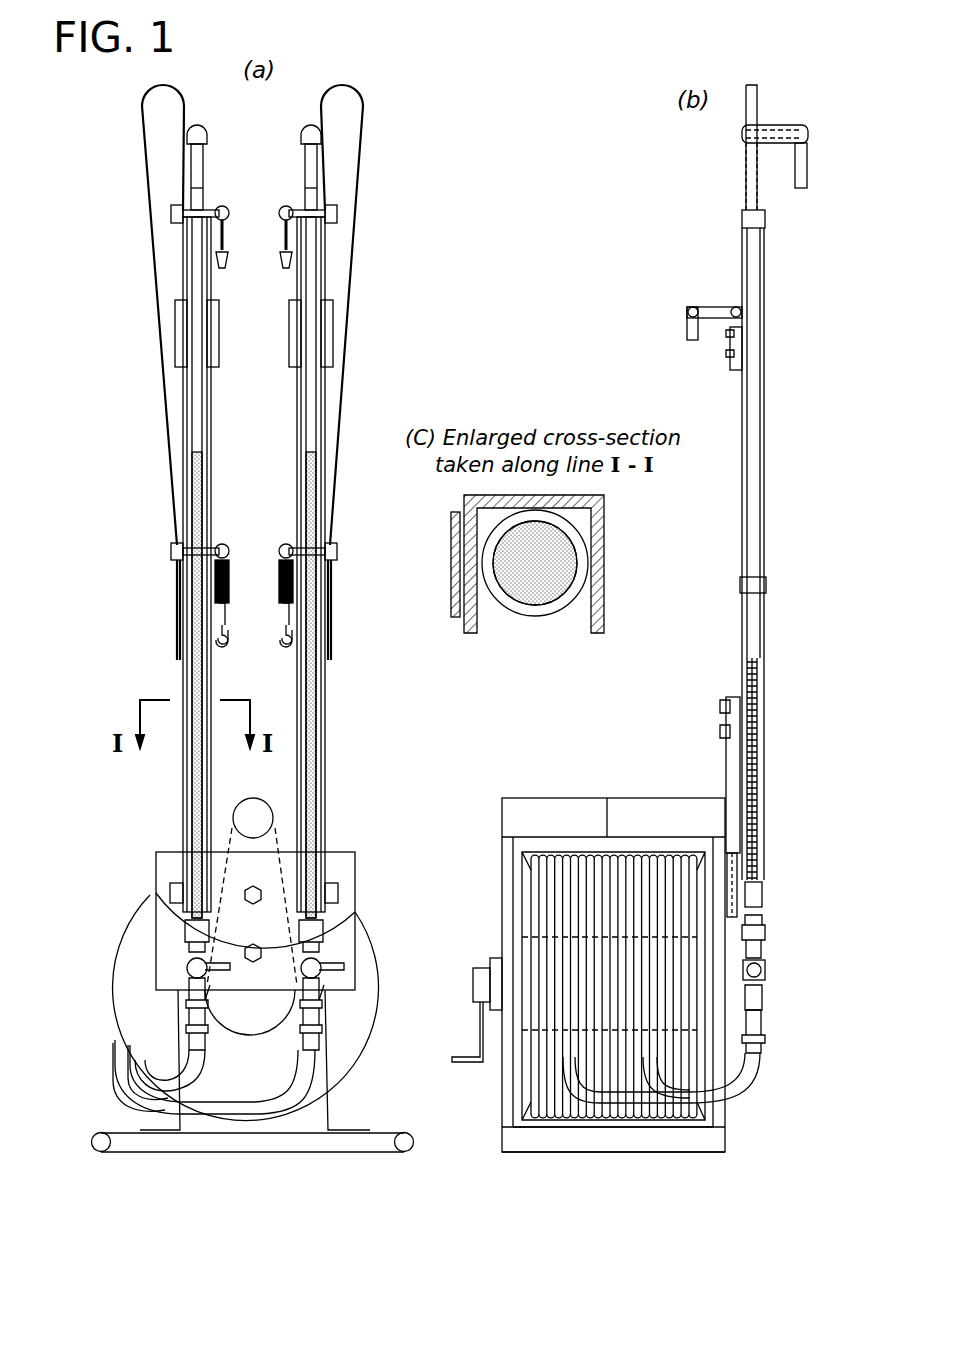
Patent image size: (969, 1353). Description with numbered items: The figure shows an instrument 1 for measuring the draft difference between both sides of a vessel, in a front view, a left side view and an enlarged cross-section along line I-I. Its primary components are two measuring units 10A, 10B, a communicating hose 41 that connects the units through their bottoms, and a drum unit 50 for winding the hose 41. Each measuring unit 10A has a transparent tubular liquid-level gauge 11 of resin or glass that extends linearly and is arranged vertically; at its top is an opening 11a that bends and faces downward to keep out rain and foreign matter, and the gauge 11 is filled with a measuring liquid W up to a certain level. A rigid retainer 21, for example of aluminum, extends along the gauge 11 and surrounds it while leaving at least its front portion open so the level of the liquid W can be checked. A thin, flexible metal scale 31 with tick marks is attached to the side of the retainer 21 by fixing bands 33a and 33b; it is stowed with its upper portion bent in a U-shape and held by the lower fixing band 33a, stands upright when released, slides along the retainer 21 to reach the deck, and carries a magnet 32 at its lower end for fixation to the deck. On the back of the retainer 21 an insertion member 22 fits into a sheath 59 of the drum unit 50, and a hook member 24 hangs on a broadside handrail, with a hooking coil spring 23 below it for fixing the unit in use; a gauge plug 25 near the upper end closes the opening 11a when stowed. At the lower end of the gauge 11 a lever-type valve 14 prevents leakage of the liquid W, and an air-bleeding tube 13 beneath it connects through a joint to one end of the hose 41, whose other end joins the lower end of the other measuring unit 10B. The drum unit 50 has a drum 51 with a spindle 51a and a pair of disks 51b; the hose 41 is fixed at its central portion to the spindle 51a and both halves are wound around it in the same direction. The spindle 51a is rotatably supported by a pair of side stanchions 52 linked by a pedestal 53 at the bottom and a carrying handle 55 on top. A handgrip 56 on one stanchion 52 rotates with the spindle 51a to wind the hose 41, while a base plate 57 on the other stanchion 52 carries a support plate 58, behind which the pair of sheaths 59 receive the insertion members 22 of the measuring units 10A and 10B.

The instrument 1 is at (408, 155).
The measuring unit 10A is at (212, 178).
The measuring unit 10B is at (300, 172).
The tubular liquid-level gauge 11 is at (196, 425).
The opening 11a is at (800, 190).
The measuring liquid W is at (196, 493).
The air-bleeding tube 13 is at (322, 1005).
The valve 14 is at (320, 965).
The retainer 21 is at (210, 432).
The insertion member 22 is at (728, 757).
The hooking coil spring 23 is at (228, 583).
The hook member 24 is at (212, 340).
The gauge plug 25 is at (222, 250).
The scale 31 is at (152, 266).
The magnet 32 is at (338, 893).
The fixing band 33a is at (171, 555).
The fixing band 33b is at (171, 215).
The communicating hose 41 is at (305, 1083).
The drum unit 50 is at (142, 895).
The drum 51 is at (445, 870).
The spindle 51a is at (545, 950).
The disks 51b is at (138, 932).
The side stanchions 52 is at (240, 1062).
The pedestal 53 is at (145, 1140).
The handle 55 is at (253, 815).
The handgrip 56 is at (480, 1030).
The base plate 57 is at (250, 1010).
The support plate 58 is at (163, 872).
The sheath 59 is at (730, 865).